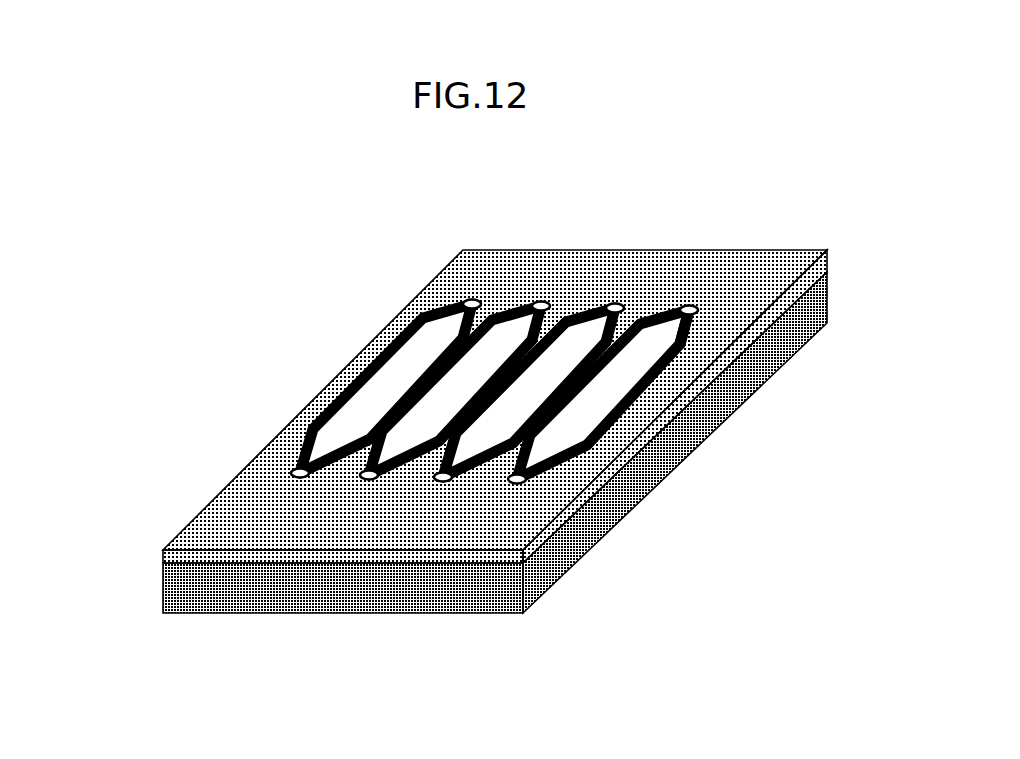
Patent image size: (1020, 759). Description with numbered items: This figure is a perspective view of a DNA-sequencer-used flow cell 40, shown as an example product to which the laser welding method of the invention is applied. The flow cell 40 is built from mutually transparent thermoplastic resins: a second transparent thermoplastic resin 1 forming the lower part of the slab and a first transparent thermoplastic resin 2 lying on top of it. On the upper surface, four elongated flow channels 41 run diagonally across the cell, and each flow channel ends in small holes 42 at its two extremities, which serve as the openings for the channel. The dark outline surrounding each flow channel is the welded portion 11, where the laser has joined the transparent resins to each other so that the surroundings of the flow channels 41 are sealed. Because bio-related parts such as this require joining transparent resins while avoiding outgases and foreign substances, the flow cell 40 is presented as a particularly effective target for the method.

The second transparent thermoplastic resin 1 is at (190, 587).
The first transparent thermoplastic resin 2 is at (605, 527).
The welded portion 11 is at (640, 395).
The DNA-sequencer-used flow cell 40 is at (514, 347).
The flow channels 41 is at (400, 370).
The holes 42 is at (704, 306).